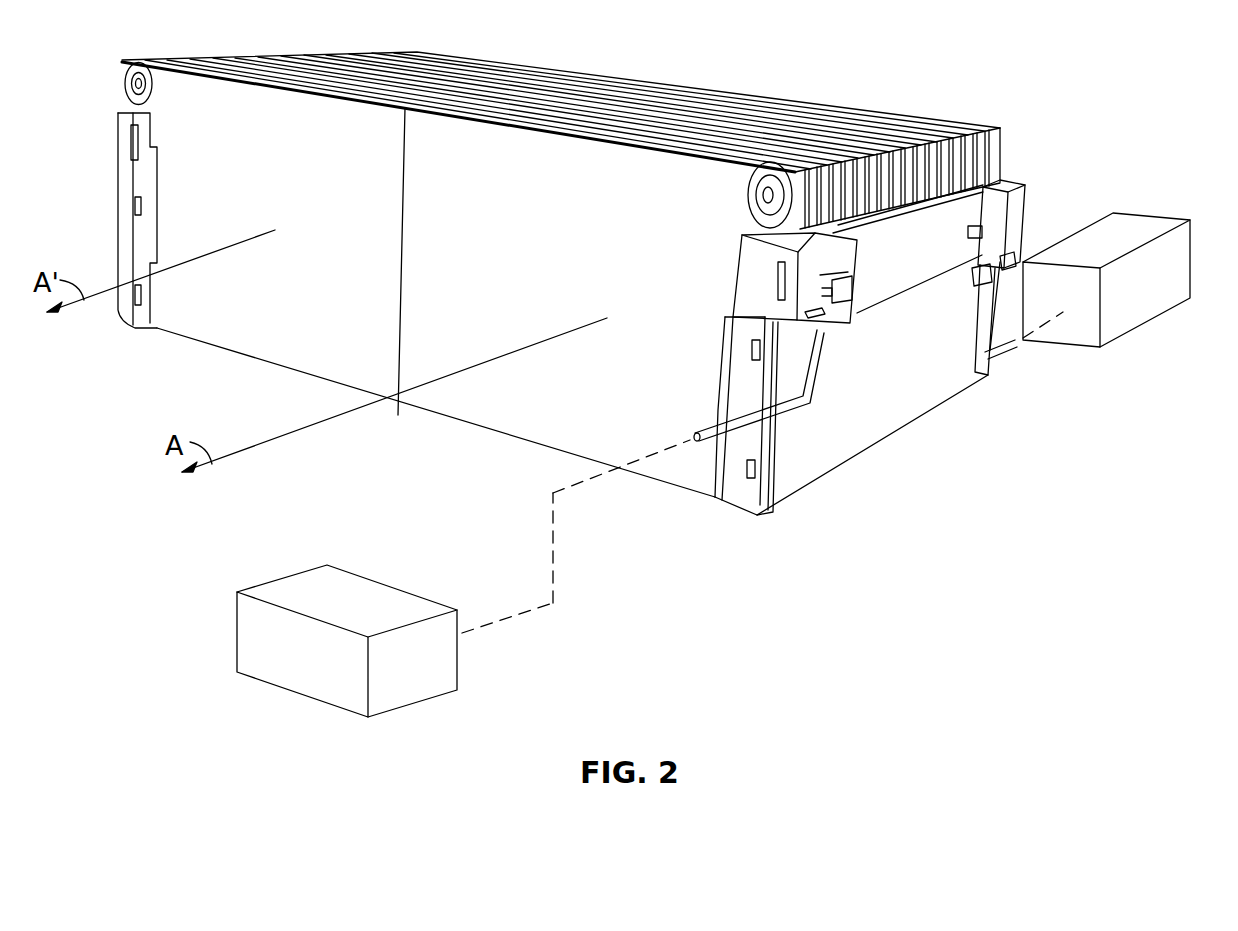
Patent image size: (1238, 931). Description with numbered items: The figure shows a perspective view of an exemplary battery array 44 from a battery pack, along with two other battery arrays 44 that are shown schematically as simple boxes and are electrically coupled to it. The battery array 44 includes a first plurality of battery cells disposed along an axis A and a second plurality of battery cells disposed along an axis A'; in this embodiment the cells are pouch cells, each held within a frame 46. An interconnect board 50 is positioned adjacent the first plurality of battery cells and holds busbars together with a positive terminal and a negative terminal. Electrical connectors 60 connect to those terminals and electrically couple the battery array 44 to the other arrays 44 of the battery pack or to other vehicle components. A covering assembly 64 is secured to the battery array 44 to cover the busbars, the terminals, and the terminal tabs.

The battery array 44 is at (296, 585).
The frame 46 is at (852, 110).
The interconnect board 50 is at (738, 493).
The electrical connector 60 is at (513, 614).
The covering assembly 64 is at (905, 410).